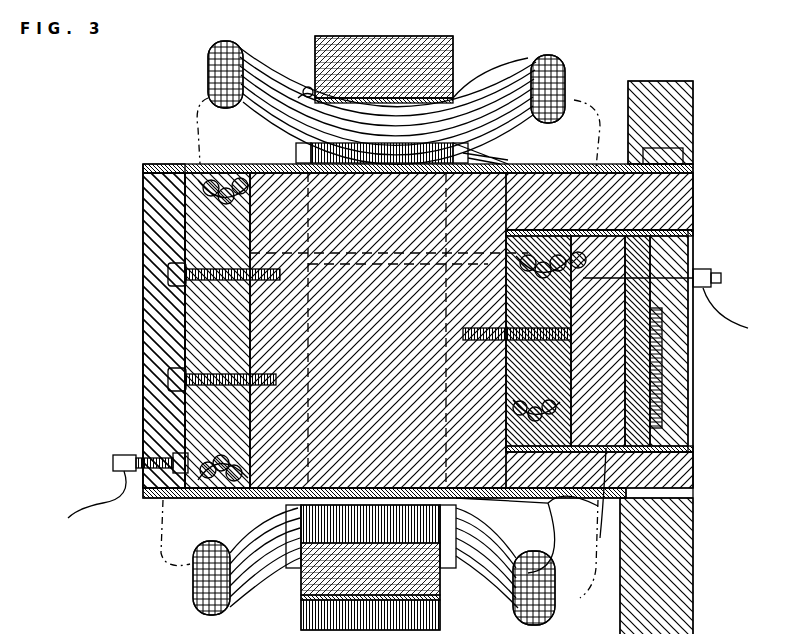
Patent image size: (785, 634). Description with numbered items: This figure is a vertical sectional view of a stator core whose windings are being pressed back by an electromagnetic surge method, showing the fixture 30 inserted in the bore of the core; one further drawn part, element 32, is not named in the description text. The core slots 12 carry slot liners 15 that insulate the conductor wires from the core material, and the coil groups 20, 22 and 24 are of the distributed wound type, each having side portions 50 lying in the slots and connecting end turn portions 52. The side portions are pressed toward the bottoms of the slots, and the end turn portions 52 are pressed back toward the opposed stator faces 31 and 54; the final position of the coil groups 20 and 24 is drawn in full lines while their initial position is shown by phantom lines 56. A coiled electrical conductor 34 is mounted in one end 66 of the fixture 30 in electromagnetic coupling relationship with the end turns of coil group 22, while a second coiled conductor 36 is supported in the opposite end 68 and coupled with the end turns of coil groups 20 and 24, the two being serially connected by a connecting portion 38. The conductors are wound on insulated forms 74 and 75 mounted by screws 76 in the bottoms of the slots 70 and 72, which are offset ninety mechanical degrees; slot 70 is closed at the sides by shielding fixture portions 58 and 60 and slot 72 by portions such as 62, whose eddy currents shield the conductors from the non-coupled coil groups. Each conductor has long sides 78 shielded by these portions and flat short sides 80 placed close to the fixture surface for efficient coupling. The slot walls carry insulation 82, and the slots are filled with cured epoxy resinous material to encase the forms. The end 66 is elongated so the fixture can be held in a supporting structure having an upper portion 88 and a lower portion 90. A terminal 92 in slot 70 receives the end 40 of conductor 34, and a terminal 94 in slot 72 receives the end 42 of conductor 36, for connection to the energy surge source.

The core slots 12 is at (471, 330).
The slot liners 15 is at (452, 90).
The coil group 20 is at (500, 60).
The coil group 22 is at (532, 148).
The coil group 24 is at (257, 574).
The fixture 30 is at (384, 306).
The stator face 31 is at (448, 48).
The rotor top lamination strip 32 is at (150, 155).
The coiled electrical conductor 34 is at (543, 496).
The second coiled conductor 36 is at (200, 475).
The connecting portion 38 is at (334, 252).
The end of coiled conductor 40 is at (565, 222).
The end of coiled conductor 42 is at (120, 500).
The side portions 50 is at (298, 80).
The end turn portions 52 is at (200, 46).
The stator face 54 is at (307, 42).
The phantom lines 56 is at (163, 91).
The shielding fixture portion 58 is at (582, 180).
The shielding fixture portion 60 is at (609, 504).
The shielding fixture portion 62 is at (135, 327).
The end of fixture 66 is at (697, 472).
The end of fixture 68 is at (124, 295).
The slot 70 is at (505, 236).
The slot 72 is at (240, 445).
The insulated form 74 is at (530, 362).
The insulated form 75 is at (210, 211).
The screws 76 is at (205, 265).
The long sides 78 is at (504, 408).
The short sides 80 is at (136, 160).
The insulation 82 is at (690, 222).
The upper portion 88 is at (686, 118).
The lower portion 90 is at (665, 583).
The terminal 92 is at (714, 270).
The terminal 94 is at (105, 450).